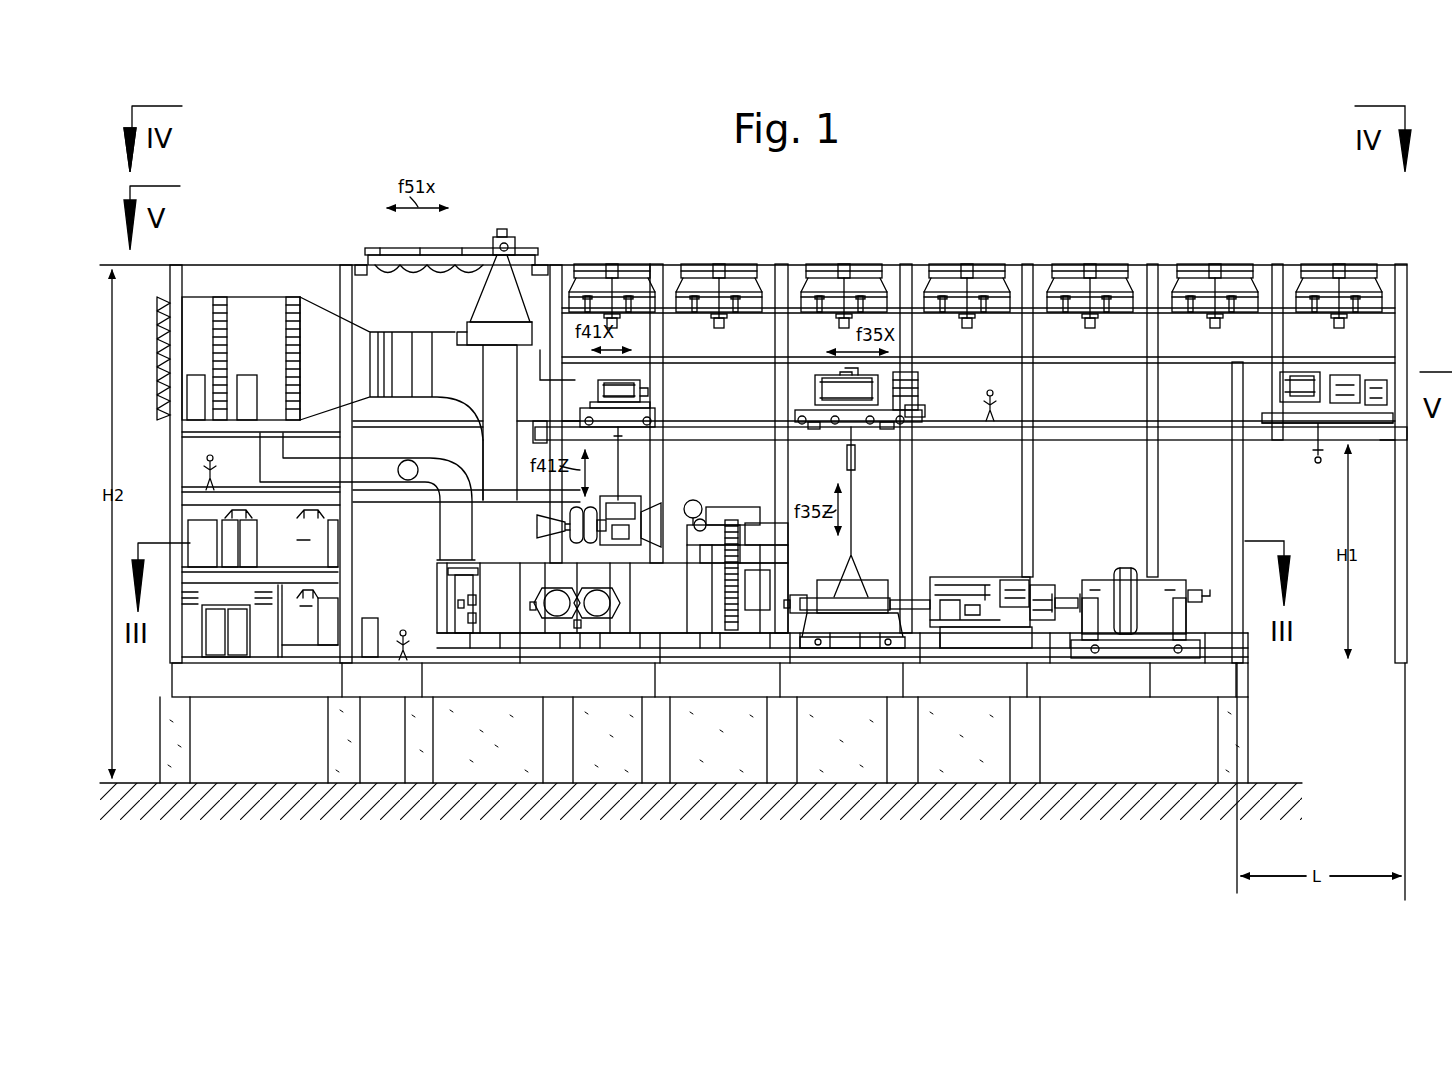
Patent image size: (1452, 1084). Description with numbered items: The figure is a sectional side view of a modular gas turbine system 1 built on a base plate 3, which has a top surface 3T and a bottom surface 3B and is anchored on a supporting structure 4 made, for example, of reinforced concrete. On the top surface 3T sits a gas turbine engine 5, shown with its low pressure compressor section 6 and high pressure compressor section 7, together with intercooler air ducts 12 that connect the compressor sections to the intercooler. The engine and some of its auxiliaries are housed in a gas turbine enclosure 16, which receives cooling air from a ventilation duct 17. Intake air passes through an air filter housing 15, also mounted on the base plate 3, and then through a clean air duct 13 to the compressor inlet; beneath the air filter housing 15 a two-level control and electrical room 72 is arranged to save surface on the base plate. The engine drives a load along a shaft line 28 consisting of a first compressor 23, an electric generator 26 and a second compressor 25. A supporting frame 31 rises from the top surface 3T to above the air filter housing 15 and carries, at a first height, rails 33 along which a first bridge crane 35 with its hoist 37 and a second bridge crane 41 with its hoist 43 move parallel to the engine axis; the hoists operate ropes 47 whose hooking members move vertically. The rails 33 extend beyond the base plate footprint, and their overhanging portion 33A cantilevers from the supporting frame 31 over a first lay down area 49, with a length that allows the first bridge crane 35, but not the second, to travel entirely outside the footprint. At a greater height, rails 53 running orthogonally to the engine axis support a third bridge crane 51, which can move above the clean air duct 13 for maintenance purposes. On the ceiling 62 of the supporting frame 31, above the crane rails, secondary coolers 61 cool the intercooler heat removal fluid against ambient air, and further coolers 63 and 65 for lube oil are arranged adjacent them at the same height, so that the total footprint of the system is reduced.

The modular gas turbine system 1 is at (970, 198).
The base plate 3 is at (732, 677).
The top surface 3T is at (1219, 660).
The bottom surface 3B is at (1140, 701).
The supporting structure 4 is at (180, 746).
The gas turbine engine 5 is at (592, 532).
The low pressure compressor section 6 is at (545, 527).
The high pressure compressor section 7 is at (603, 538).
The intercooler air ducts 12 is at (600, 618).
The clean air duct 13 is at (418, 352).
The air filter housing 15 is at (248, 320).
The gas turbine enclosure 16 is at (670, 604).
The ventilation duct 17 is at (450, 534).
The first compressor 23 is at (830, 588).
The second compressor 25 is at (1163, 590).
The electric generator 26 is at (975, 583).
The shaft line 28 is at (918, 600).
The supporting frame 31 is at (1226, 506).
The rails 33 is at (1118, 432).
The overhanging portion of the rails 33A is at (1385, 442).
The first bridge crane 35 is at (935, 409).
The hoist 37 is at (812, 390).
The second bridge crane 41 is at (654, 379).
The hoist 43 is at (630, 396).
The ropes 47 is at (622, 470).
The first lay down area 49 is at (1277, 780).
The third bridge crane 51 is at (505, 247).
The rails 53 is at (357, 266).
The secondary coolers 61 is at (796, 349).
The ceiling 62 is at (1343, 358).
The further cooler 63 is at (763, 242).
The further cooler 65 is at (657, 242).
The control and electrical room 72 is at (305, 606).